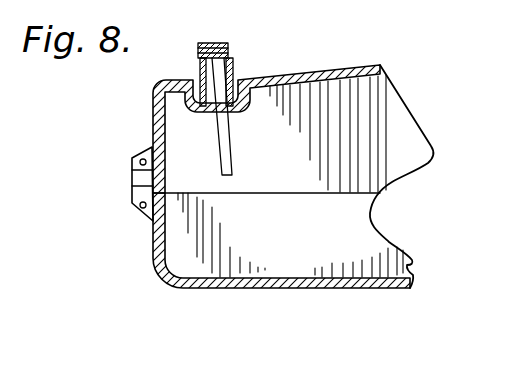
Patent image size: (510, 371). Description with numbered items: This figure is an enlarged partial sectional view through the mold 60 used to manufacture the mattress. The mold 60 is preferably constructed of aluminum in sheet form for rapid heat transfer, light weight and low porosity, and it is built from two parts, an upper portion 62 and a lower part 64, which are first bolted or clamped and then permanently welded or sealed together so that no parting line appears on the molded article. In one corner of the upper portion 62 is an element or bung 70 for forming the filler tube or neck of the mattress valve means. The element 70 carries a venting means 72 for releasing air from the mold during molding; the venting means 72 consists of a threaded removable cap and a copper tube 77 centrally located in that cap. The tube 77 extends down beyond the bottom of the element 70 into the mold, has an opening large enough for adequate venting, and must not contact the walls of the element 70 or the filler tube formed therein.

The mold 60 is at (125, 166).
The upper portion of the mold 62 is at (153, 112).
The mold part 64 is at (153, 248).
The element or bung 70 is at (232, 63).
The venting means 72 is at (210, 42).
The copper tube 77 is at (232, 153).